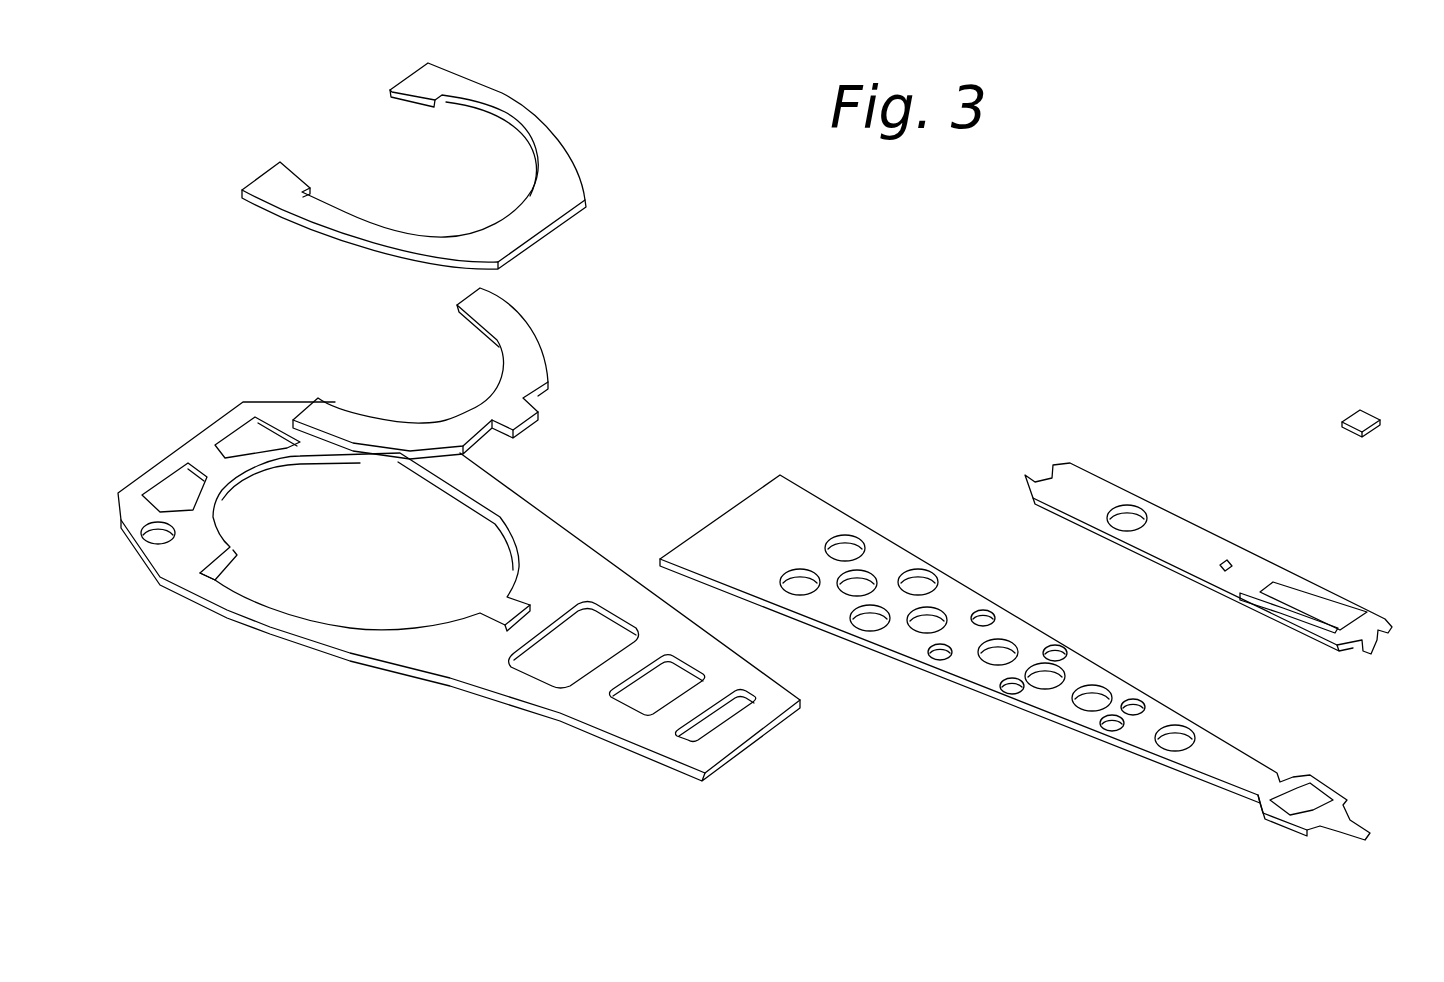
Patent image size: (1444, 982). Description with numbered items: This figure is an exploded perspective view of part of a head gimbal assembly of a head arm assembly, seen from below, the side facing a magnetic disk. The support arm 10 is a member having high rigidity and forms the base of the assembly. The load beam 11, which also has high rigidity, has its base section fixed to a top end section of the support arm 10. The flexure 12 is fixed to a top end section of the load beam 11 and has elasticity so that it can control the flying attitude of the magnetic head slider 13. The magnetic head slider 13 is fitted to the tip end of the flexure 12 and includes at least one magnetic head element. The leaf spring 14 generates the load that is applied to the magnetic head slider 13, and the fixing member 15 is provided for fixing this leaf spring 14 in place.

The support arm 10 is at (550, 542).
The load beam 11 is at (1035, 697).
The flexure 12 is at (1210, 540).
The magnetic head slider 13 is at (1370, 417).
The leaf spring 14 is at (517, 118).
The fixing member 15 is at (523, 345).